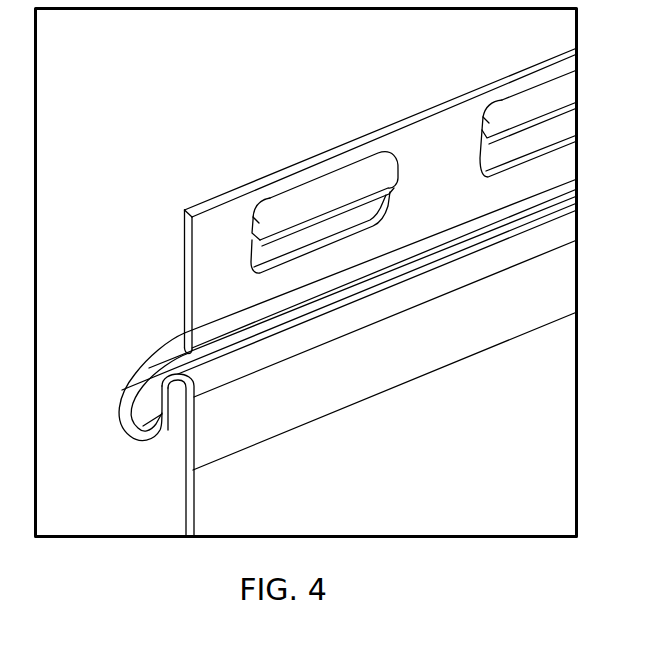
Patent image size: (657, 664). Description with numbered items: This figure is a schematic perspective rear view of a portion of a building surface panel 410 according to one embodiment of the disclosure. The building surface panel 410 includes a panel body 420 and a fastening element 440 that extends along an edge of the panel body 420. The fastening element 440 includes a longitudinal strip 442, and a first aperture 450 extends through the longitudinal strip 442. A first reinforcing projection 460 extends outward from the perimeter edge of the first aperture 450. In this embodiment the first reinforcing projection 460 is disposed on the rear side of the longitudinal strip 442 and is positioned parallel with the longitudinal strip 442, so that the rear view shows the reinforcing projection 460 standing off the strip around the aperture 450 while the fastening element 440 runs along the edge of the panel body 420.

The building surface panel 410 is at (134, 100).
The panel body 420 is at (385, 460).
The fastening element 440 is at (148, 287).
The longitudinal strip 442 is at (456, 163).
The first aperture 450 is at (332, 222).
The first reinforcing projection 460 is at (300, 203).